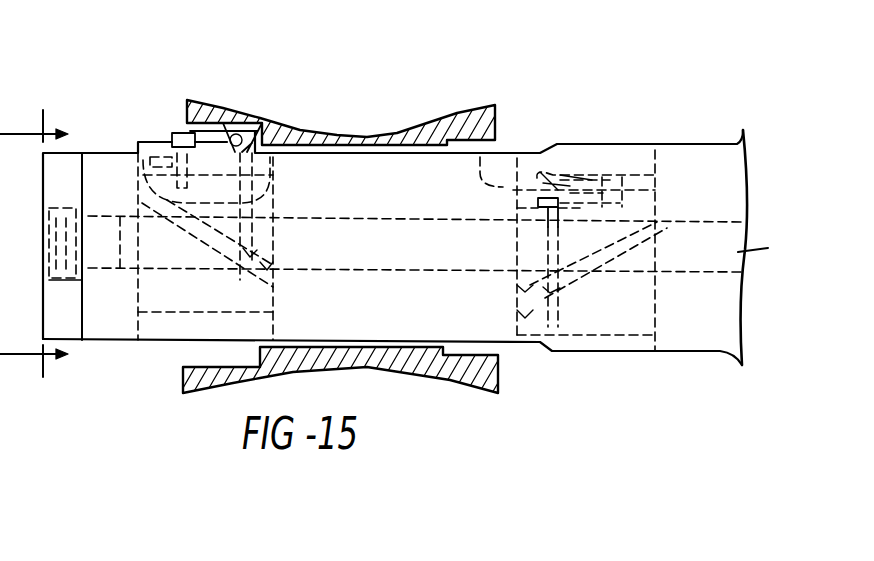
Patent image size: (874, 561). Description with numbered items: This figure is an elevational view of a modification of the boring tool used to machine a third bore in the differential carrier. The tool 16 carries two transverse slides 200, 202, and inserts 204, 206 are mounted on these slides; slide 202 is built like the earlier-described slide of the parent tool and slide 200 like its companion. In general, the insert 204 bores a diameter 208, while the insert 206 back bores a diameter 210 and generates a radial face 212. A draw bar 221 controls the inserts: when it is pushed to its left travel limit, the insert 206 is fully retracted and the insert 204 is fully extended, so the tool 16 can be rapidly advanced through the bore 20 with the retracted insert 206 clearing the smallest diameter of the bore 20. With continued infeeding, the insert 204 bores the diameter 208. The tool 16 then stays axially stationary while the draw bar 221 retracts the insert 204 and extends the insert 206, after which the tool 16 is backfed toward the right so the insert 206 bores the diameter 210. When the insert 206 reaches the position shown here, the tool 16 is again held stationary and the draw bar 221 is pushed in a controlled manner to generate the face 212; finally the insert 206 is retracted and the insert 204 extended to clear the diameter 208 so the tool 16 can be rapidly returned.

The tool 16 is at (625, 388).
The bore 20 is at (180, 353).
The transverse slide 200 is at (640, 325).
The transverse slide 202 is at (270, 307).
The insert 204 is at (558, 172).
The insert 206 is at (215, 118).
The diameter 208 is at (485, 138).
The diameter 210 is at (186, 128).
The radial face 212 is at (287, 124).
The draw bar 221 is at (760, 248).